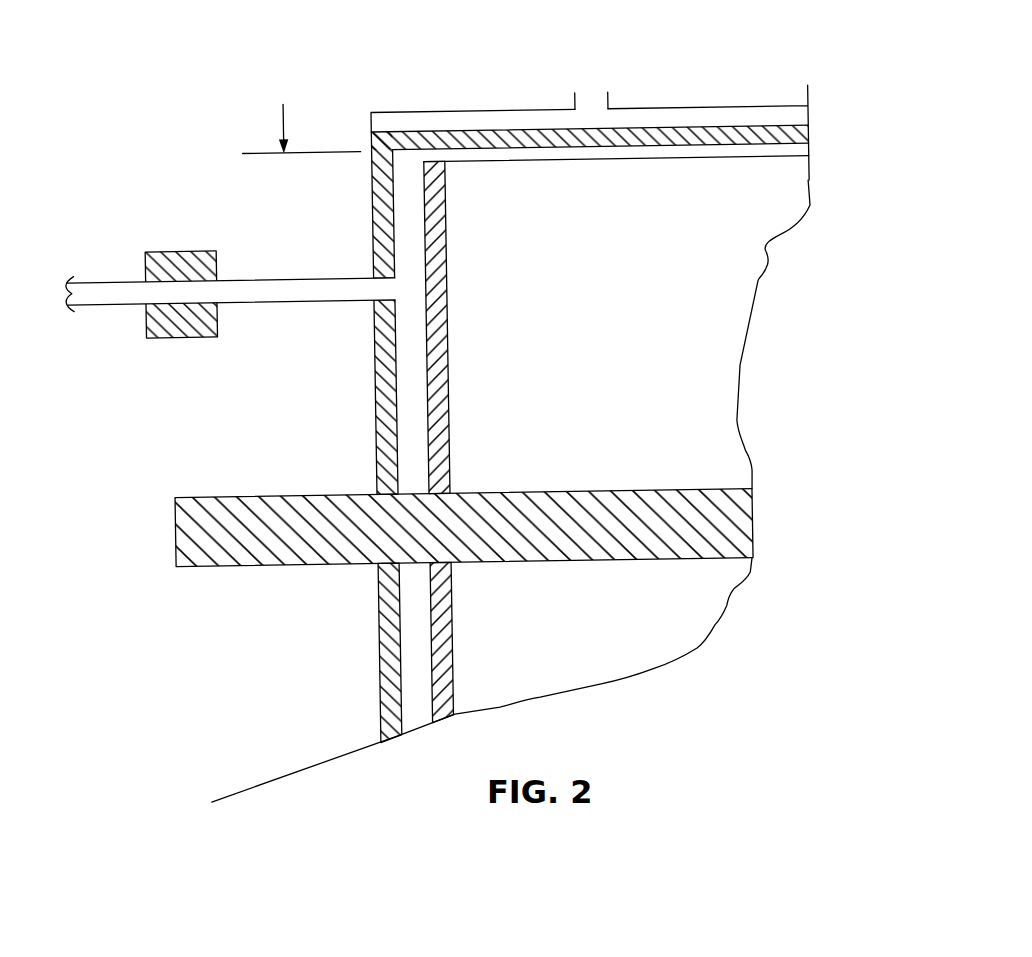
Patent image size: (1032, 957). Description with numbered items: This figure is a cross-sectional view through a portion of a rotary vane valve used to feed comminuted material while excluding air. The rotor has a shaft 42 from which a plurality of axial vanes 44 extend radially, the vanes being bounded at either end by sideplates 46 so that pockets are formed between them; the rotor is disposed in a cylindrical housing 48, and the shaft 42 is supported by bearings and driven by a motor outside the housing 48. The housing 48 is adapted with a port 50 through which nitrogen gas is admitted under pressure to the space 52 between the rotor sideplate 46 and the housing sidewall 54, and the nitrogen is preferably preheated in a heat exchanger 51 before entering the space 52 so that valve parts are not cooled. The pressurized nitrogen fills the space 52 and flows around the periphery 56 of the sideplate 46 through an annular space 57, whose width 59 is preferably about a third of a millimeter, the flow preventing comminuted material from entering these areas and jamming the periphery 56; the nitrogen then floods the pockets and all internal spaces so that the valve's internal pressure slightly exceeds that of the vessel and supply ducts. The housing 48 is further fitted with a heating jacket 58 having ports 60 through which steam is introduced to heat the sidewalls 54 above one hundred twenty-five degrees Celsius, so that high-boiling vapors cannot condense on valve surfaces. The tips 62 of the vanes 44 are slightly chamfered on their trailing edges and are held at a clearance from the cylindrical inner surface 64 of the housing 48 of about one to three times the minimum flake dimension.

The shaft 42 is at (242, 567).
The axial vanes 44 is at (703, 270).
The sideplates 46 is at (442, 424).
The cylindrical housing 48 is at (372, 226).
The port 50 is at (276, 305).
The heat exchanger 51 is at (174, 253).
The space 52 is at (407, 185).
The housing sidewall 54 is at (393, 247).
The periphery 56 is at (443, 172).
The annular space 57 is at (425, 162).
The heating jacket 58 is at (793, 111).
The width 59 is at (301, 114).
The ports 60 is at (589, 97).
The tips 62 is at (670, 158).
The cylindrical inner surface 64 is at (763, 142).